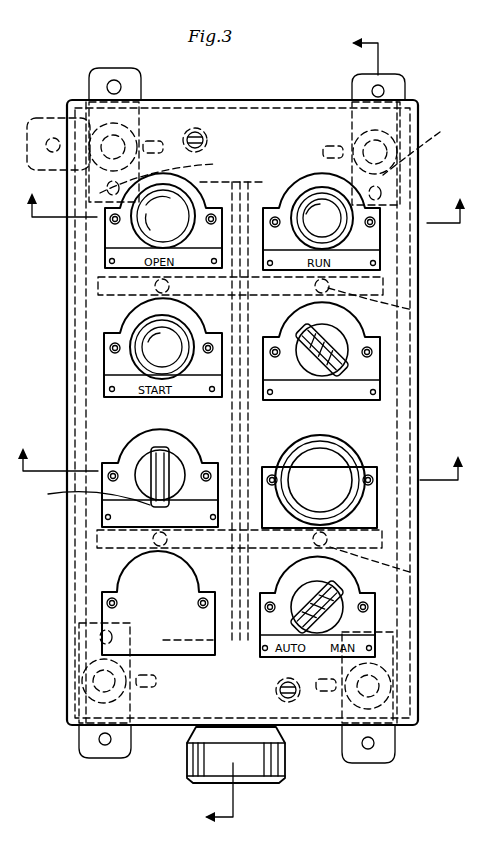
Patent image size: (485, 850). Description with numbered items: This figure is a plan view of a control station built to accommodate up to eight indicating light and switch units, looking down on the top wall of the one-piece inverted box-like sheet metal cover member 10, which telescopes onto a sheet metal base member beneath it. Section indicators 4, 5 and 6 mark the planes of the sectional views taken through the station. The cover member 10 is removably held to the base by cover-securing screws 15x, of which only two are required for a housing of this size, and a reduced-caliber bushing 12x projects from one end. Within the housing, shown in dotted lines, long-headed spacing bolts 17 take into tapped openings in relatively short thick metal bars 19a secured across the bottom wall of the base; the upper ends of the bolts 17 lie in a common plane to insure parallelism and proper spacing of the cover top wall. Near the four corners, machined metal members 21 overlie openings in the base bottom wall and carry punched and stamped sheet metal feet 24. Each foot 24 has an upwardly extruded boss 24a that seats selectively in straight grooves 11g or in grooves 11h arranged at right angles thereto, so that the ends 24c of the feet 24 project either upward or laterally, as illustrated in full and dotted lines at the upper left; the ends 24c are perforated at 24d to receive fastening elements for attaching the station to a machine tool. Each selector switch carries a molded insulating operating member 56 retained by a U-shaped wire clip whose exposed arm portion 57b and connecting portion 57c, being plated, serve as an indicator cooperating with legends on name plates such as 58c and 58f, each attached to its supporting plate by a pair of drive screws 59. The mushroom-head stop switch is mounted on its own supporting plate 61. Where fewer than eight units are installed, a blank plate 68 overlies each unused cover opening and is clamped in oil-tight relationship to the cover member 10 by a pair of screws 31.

The cover member 10 is at (100, 316).
The grooves 11g is at (158, 140).
The grooves 11h is at (287, 154).
The bushing 12x is at (257, 772).
The securing screws 15x is at (207, 135).
The long-headed bolts 17 is at (414, 310).
The bars 19a is at (383, 285).
The machined metal members 21 is at (360, 128).
The feet 24 is at (89, 86).
The bosses 24a is at (105, 190).
The ends of foot members 24c is at (113, 68).
The perforations 24d is at (119, 84).
The screws 31 is at (107, 603).
The operating member 56 is at (306, 336).
The arm portion of clip 57b is at (152, 460).
The connecting portion of clip 57c is at (82, 497).
The name plate 58c is at (128, 518).
The name plate 58f is at (372, 383).
The drive screws 59 is at (105, 517).
The supporting plate 61 is at (367, 510).
The blank plate 68 is at (158, 603).
The section line 4- 4 is at (279, 432).
The section line 5- 5 is at (245, 199).
The section line 6- 6 is at (240, 454).